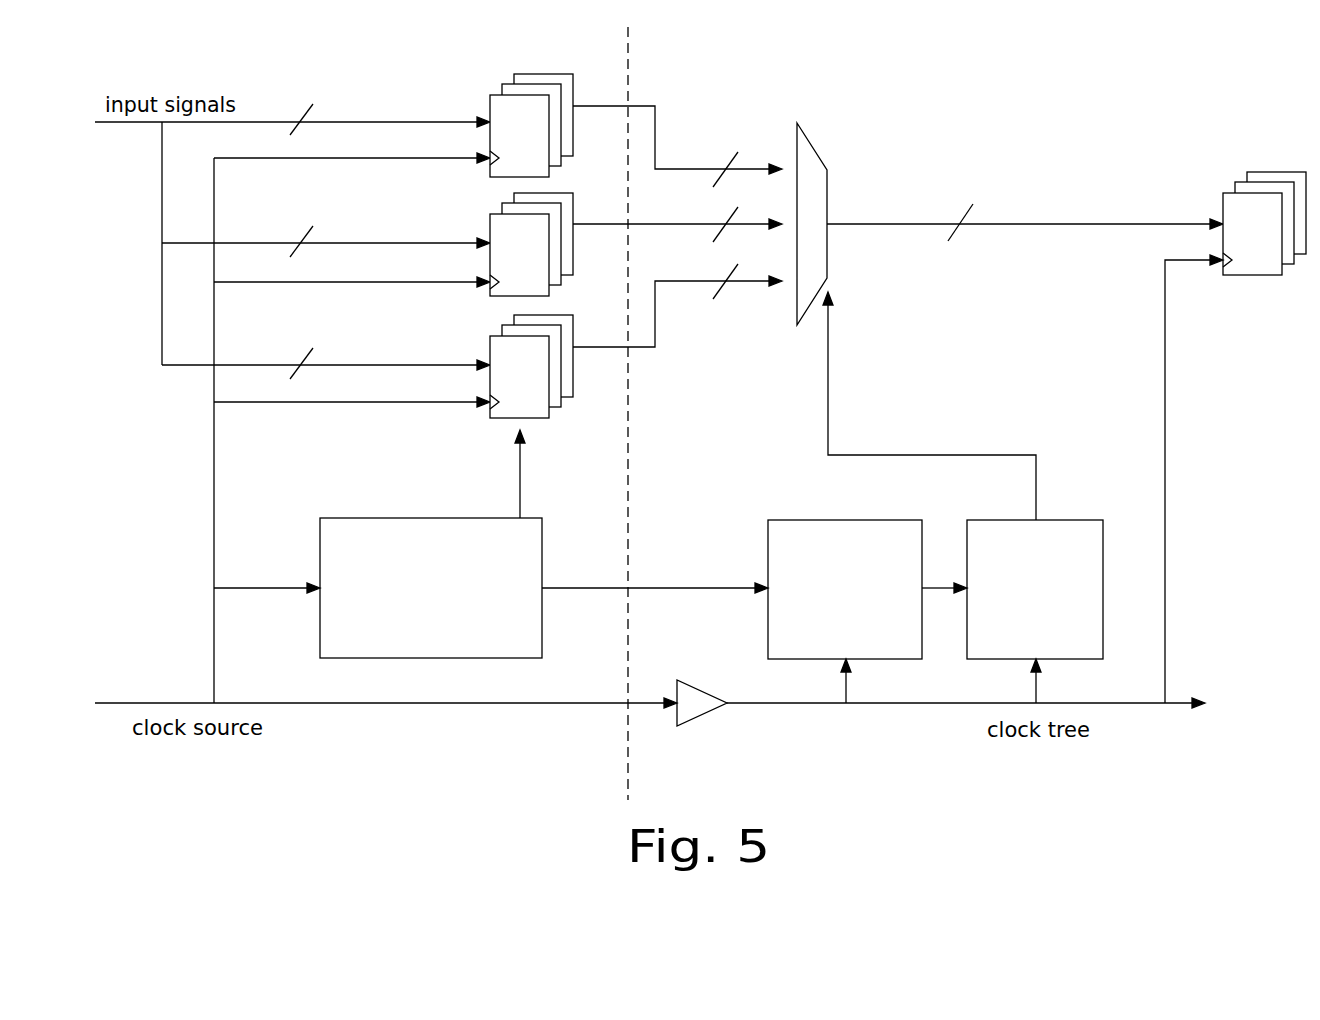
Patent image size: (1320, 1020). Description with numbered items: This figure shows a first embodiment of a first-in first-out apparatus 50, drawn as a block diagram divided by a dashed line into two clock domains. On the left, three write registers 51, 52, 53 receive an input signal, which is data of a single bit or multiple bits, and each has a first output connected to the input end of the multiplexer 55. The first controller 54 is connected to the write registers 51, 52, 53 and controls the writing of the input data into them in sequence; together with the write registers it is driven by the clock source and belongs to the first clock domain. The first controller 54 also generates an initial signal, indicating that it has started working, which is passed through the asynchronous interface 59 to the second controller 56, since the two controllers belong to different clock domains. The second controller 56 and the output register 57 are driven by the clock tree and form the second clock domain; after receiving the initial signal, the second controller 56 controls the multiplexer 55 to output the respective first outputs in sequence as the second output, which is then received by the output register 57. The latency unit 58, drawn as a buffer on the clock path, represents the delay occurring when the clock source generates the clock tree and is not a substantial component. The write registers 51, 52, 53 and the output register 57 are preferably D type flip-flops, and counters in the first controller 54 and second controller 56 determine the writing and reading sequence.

The FIFO apparatus 50 is at (1099, 104).
The write register 51 is at (490, 108).
The write register 52 is at (490, 226).
The write register 53 is at (490, 348).
The first controller 54 is at (405, 518).
The multiplexer 55 is at (815, 151).
The second controller 56 is at (1065, 520).
The output register 57 is at (1250, 277).
The latency unit 58 is at (702, 713).
The asynchronous interface 59 is at (768, 555).